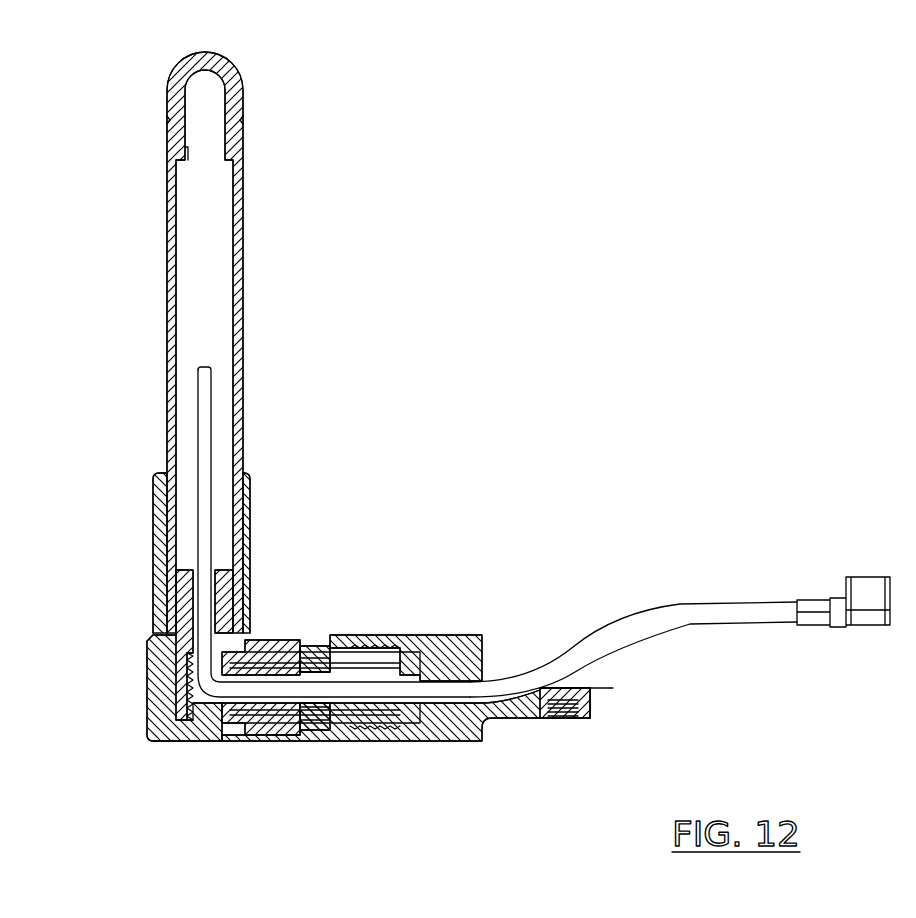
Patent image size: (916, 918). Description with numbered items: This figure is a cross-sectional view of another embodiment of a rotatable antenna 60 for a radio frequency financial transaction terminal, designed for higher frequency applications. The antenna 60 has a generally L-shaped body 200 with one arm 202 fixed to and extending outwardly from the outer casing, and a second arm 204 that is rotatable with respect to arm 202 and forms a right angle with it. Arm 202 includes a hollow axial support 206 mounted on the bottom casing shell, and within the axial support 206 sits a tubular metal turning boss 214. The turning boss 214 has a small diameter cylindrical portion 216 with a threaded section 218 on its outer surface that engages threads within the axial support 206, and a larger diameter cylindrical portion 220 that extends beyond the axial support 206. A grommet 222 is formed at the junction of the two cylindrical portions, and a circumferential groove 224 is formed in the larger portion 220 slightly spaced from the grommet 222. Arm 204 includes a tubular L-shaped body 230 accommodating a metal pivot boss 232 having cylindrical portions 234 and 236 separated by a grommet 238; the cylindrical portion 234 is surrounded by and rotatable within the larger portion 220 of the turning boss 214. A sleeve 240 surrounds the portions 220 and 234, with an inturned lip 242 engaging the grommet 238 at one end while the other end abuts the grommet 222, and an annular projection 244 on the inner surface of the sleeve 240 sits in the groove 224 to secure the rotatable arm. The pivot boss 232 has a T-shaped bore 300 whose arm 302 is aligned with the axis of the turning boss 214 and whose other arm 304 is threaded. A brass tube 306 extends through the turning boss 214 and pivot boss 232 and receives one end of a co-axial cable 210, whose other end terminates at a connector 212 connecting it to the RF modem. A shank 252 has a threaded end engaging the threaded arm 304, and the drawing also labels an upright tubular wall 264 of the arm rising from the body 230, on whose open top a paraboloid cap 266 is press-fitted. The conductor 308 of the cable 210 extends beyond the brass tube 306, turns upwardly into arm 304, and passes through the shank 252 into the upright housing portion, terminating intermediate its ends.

The rotatable antenna 60 is at (669, 134).
The L-shaped body 200 is at (134, 813).
The arm 202 is at (481, 489).
The arm 204 is at (324, 365).
The axial support 206 is at (420, 640).
The co-axial cable 210 is at (656, 606).
The connector 212 is at (824, 632).
The turning boss 214 is at (326, 646).
The small diameter cylindrical portion 216 is at (415, 668).
The threaded section 218 is at (373, 743).
The larger diameter cylindrical portion 220 is at (282, 652).
The grommet 222 is at (363, 743).
The circumferential groove 224 is at (331, 654).
The tubular L-shaped body 230 is at (149, 703).
The pivot boss 232 is at (227, 738).
The cylindrical portion 234 is at (300, 652).
The cylindrical portion 236 is at (185, 742).
The grommet 238 is at (262, 648).
The sleeve 240 is at (270, 742).
The inturned lip 242 is at (242, 742).
The annular projection 244 is at (306, 742).
The shank 252 is at (185, 592).
The probe tube 264 is at (244, 221).
The paraboloid cap 266 is at (172, 95).
The T-shaped bore 300 is at (189, 690).
The arm of the bore 302 is at (194, 736).
The threaded arm of the bore 304 is at (186, 655).
The brass tube 306 is at (450, 743).
The conductor 308 is at (202, 392).